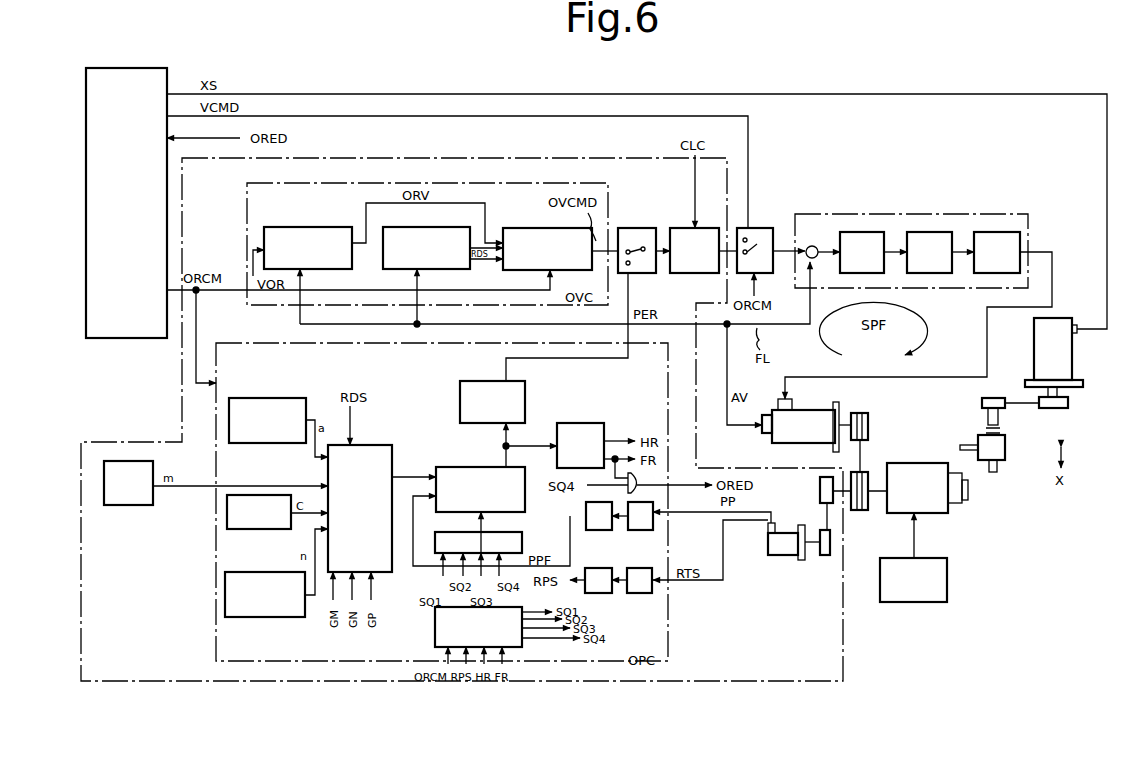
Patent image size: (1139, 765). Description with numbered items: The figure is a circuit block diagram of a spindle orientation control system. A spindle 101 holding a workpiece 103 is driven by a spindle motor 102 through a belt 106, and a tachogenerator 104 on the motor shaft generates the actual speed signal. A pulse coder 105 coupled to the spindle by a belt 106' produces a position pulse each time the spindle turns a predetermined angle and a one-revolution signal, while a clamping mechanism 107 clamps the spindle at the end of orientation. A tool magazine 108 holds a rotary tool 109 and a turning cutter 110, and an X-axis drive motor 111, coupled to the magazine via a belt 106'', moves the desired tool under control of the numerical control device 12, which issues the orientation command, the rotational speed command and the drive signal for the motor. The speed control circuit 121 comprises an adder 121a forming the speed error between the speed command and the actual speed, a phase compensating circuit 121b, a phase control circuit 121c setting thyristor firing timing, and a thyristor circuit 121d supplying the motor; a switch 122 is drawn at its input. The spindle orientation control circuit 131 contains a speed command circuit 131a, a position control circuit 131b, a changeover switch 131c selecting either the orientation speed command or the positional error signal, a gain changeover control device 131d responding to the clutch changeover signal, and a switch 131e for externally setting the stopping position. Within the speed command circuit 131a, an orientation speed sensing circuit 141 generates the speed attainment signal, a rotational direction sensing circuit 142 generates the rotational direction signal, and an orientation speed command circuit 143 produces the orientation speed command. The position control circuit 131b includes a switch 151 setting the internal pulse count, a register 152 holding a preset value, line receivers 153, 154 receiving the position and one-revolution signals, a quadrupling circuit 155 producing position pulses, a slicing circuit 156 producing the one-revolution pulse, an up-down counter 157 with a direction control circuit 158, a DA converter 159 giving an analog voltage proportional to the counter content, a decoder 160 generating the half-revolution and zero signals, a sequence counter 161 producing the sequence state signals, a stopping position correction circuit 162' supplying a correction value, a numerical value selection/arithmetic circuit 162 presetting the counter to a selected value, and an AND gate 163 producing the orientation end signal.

The numerical control device 12 is at (130, 68).
The spindle 101 is at (916, 463).
The spindle motor 102 is at (807, 410).
The workpiece 103 is at (968, 500).
The tachogenerator 104 is at (766, 433).
The pulse coder 105 is at (784, 555).
The belt 106 is at (874, 431).
The belt 106' is at (853, 506).
The belt 106'' is at (1025, 422).
The clamping mechanism 107 is at (927, 602).
The tool magazine 108 is at (1005, 452).
The rotary tool 109 is at (963, 444).
The turning cutter 110 is at (994, 474).
The X-axis drive motor 111 is at (1072, 362).
The speed control circuit 121 is at (906, 214).
The adder 121a is at (814, 246).
The phase compensating circuit 121b is at (854, 242).
The phase control circuit 121c is at (920, 242).
The thyristor circuit 121d is at (982, 242).
The changeover switch 122 is at (760, 227).
The spindle orientation control circuit 131 is at (223, 683).
The speed command circuit 131a is at (247, 213).
The position control circuit 131b is at (722, 656).
The changeover switch 131c is at (640, 228).
The gain changeover control device 131d is at (692, 273).
The switch 131e is at (134, 505).
The orientation speed sensing circuit 141 is at (290, 231).
The rotational direction sensing circuit 142 is at (436, 269).
The orientation speed command circuit 143 is at (504, 230).
The switch 151 is at (271, 617).
The register 152 is at (283, 398).
The line receiver 153 is at (640, 530).
The line receiver 154 is at (640, 593).
The quadrupling circuit 155 is at (598, 530).
The slicing circuit 156 is at (598, 568).
The up-down counter 157 is at (525, 506).
The up-down direction control circuit 158 is at (522, 545).
The DA converter 159 is at (525, 396).
The decoder 160 is at (574, 427).
The sequence counter 161 is at (435, 628).
The numerical value selection/arithmetic circuit 162 is at (385, 504).
The stopping position correction circuit 162' is at (259, 529).
The AND gate 163 is at (638, 478).